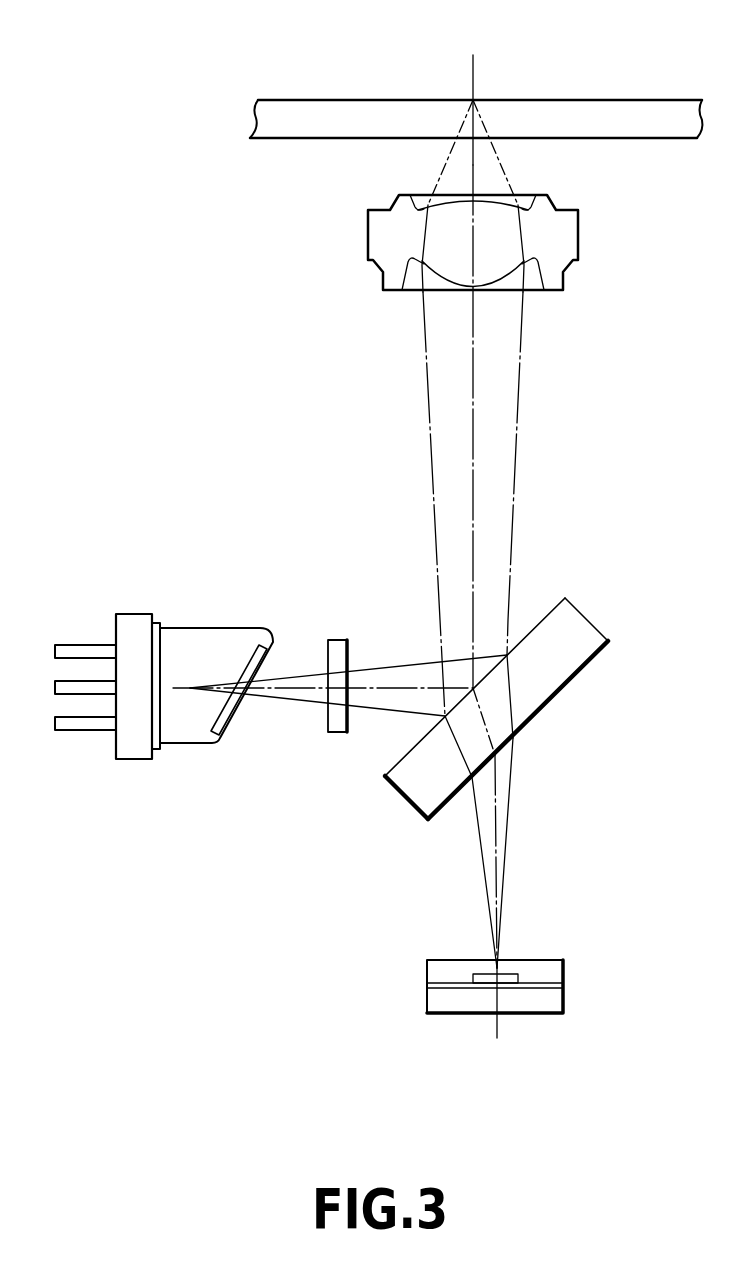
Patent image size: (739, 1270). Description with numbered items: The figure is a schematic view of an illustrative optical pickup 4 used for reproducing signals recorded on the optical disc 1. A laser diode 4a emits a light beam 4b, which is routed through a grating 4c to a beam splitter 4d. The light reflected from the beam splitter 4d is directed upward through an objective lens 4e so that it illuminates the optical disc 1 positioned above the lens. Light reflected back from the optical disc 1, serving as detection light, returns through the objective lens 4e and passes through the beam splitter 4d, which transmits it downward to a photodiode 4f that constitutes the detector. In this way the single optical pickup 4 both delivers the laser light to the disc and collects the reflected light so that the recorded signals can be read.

The optical disc 1 is at (633, 99).
The optical pickup 4 is at (605, 376).
The laser diode 4a is at (132, 630).
The light beam 4b is at (397, 663).
The grating 4c is at (338, 639).
The beam splitter 4d is at (551, 678).
The objective lens 4e is at (555, 235).
The photodiode 4f is at (535, 998).